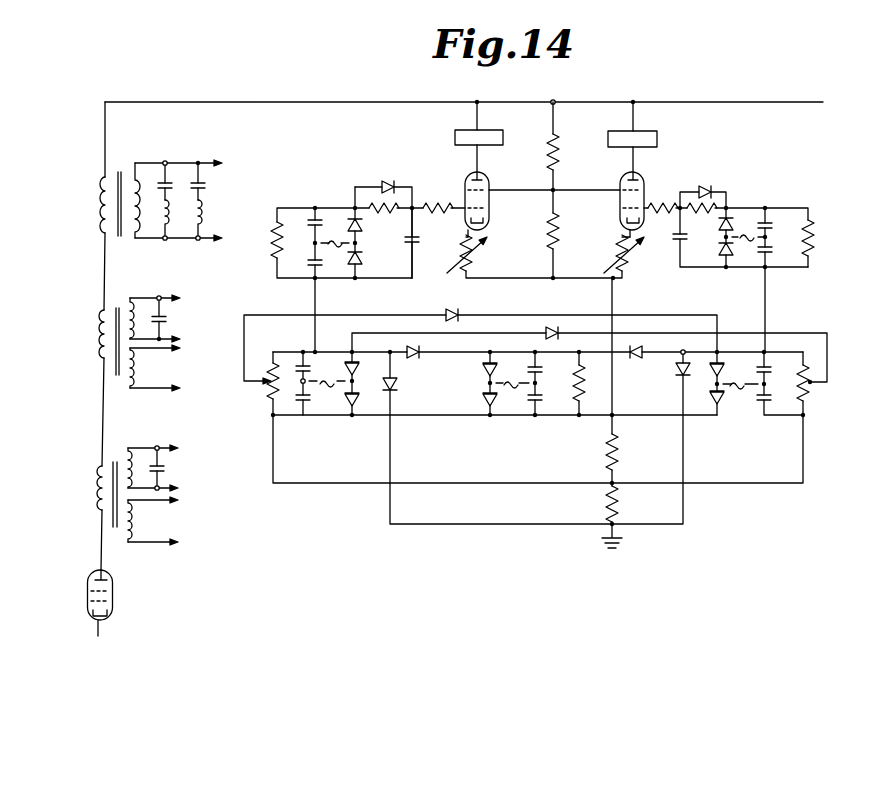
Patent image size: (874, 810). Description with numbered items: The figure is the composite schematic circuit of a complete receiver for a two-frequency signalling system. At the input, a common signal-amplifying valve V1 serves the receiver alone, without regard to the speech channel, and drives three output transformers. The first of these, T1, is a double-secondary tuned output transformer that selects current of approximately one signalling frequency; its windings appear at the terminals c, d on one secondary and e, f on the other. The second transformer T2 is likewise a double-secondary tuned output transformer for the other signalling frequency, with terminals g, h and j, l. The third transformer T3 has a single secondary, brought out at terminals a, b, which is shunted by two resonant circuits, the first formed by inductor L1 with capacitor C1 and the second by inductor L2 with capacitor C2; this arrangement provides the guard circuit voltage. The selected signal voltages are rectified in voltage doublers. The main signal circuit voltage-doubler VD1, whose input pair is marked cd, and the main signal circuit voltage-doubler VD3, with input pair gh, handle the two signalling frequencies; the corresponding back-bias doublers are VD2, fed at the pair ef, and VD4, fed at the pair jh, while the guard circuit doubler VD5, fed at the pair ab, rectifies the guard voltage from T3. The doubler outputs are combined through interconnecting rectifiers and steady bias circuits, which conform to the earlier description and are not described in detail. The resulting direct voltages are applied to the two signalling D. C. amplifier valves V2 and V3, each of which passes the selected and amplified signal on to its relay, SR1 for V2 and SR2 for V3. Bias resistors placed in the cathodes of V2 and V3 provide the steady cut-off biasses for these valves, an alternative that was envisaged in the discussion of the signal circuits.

The transformer T3 is at (120, 200).
The capacitor C1 is at (160, 180).
The inductor L1 is at (174, 220).
The capacitor C2 is at (193, 180).
The inductor L2 is at (207, 220).
The terminal a is at (186, 164).
The terminal b is at (186, 238).
The double-secondary tuned output transformer T1 is at (116, 338).
The terminal c is at (161, 297).
The terminal d is at (162, 335).
The terminal e is at (161, 351).
The terminal f is at (160, 387).
The double-secondary tuned output transformer T2 is at (114, 490).
The terminal g is at (160, 447).
The terminal h is at (160, 485).
The terminal j is at (156, 503).
The terminal l is at (156, 541).
The signal-amplifying valve V1 is at (91, 600).
The signalling D. C. amplifier valve V2 is at (469, 191).
The signalling D. C. amplifier valve V3 is at (638, 192).
The relay SR1 is at (461, 125).
The relay SR2 is at (649, 125).
The main signal circuit voltage-doubler VD1 is at (345, 230).
The back-bias doubler VD2 is at (492, 397).
The main signal circuit voltage-doubler VD3 is at (743, 227).
The back-bias doubler VD4 is at (761, 395).
The guard circuit doubler VD5 is at (531, 395).
The input terminals c-d cd is at (335, 254).
The input terminals g-h gh is at (748, 227).
The input terminals e-f ef is at (327, 374).
The input terminals a-b ab is at (512, 393).
The input terminals j-h jh is at (740, 373).